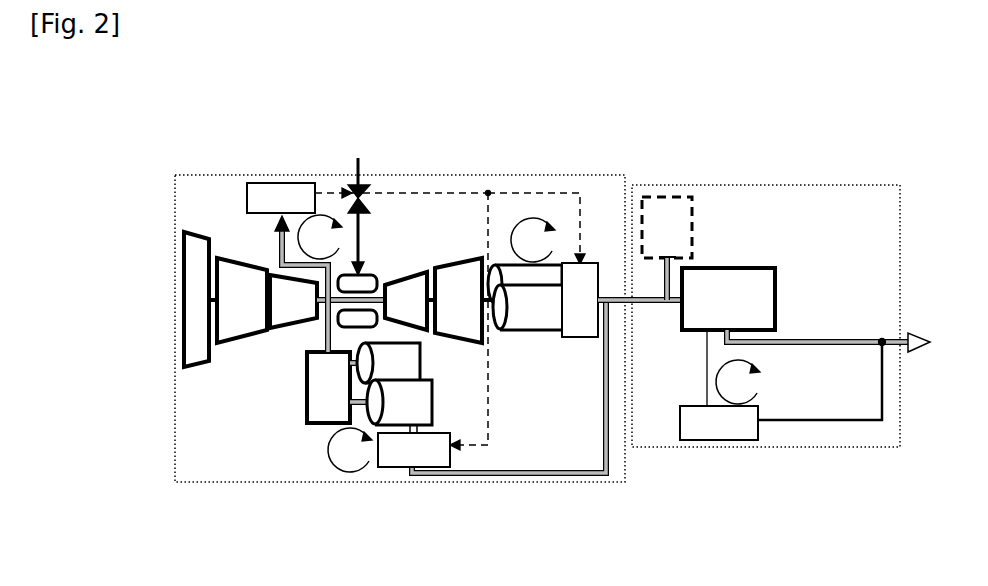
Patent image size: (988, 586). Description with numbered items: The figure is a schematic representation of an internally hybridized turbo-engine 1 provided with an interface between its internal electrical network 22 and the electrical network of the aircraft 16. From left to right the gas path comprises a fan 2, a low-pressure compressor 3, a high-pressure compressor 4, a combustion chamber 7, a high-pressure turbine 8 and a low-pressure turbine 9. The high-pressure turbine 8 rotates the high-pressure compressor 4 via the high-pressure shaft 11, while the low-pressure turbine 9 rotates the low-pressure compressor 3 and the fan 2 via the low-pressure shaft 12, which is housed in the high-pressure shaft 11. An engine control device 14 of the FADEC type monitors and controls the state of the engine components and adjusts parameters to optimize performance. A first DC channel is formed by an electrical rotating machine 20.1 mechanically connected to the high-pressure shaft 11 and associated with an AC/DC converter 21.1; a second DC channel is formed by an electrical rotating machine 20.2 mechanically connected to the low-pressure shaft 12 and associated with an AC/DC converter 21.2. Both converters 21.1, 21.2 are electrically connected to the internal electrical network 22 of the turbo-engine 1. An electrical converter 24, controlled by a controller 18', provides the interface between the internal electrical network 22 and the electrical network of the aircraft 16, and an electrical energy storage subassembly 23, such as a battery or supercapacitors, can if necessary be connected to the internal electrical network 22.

The turbo-engine 1 is at (193, 181).
The fan 2 is at (196, 256).
The low-pressure compressor 3 is at (242, 317).
The high-pressure compressor 4 is at (287, 310).
The combustion chamber 7 is at (362, 285).
The high-pressure turbine 8 is at (405, 290).
The low-pressure turbine 9 is at (462, 285).
The high-pressure shaft 11 is at (322, 318).
The low-pressure shaft 12 is at (337, 300).
The engine control device 14 is at (416, 316).
The electrical network of the aircraft 16 is at (848, 340).
The controller 18' is at (720, 385).
The electrical rotating machine 20.1 is at (423, 400).
The electrical rotating machine 20.2 is at (535, 315).
The AC/DC converter 21.1 is at (389, 448).
The AC/DC converter 21.2 is at (588, 278).
The internal electrical network 22 is at (535, 476).
The electrical energy storage subassembly 23 is at (670, 200).
The electrical converter 24 is at (686, 299).